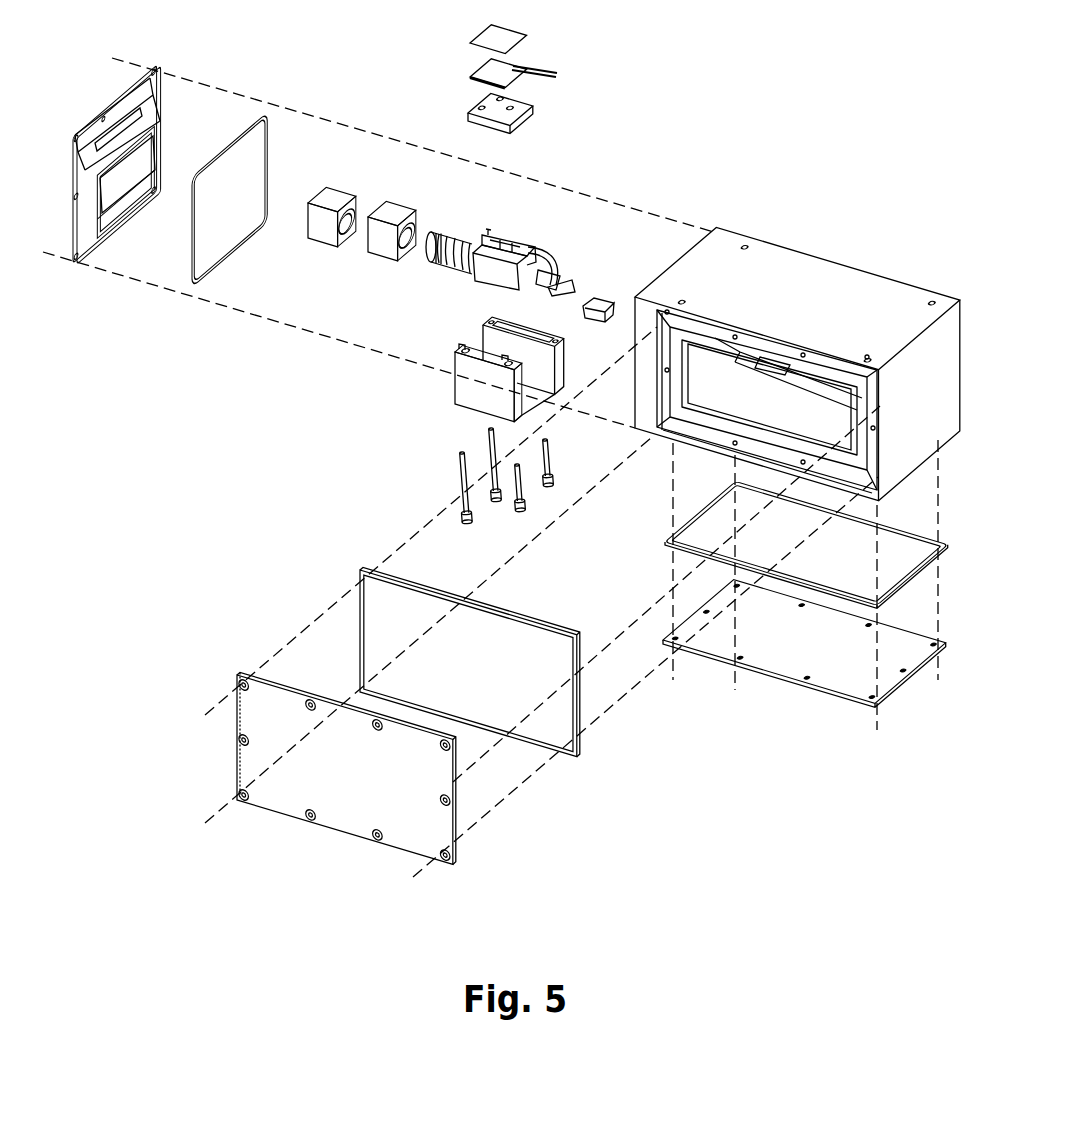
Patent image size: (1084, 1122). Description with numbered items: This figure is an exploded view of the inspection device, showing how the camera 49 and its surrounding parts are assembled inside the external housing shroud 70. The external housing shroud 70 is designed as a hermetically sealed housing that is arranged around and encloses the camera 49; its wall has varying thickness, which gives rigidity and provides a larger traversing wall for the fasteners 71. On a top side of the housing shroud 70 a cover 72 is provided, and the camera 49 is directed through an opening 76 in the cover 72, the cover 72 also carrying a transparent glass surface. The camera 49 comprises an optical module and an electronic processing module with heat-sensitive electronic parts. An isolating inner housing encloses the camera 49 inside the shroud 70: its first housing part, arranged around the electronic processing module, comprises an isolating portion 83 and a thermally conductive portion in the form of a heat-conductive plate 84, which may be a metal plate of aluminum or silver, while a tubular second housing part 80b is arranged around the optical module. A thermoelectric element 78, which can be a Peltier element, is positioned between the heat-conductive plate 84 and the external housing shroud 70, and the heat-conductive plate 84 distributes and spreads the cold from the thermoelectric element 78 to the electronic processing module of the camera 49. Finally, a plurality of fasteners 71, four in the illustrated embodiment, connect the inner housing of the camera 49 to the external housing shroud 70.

The external housing shroud 70 is at (800, 260).
The cover 72 is at (90, 112).
The opening 76 is at (118, 203).
The thermoelectric element 78 is at (517, 62).
The second housing part 80b is at (336, 192).
The heat-conductive plate 84 is at (530, 100).
The camera 49 is at (437, 262).
The isolating portion 83 is at (458, 393).
The fasteners 71 is at (463, 488).